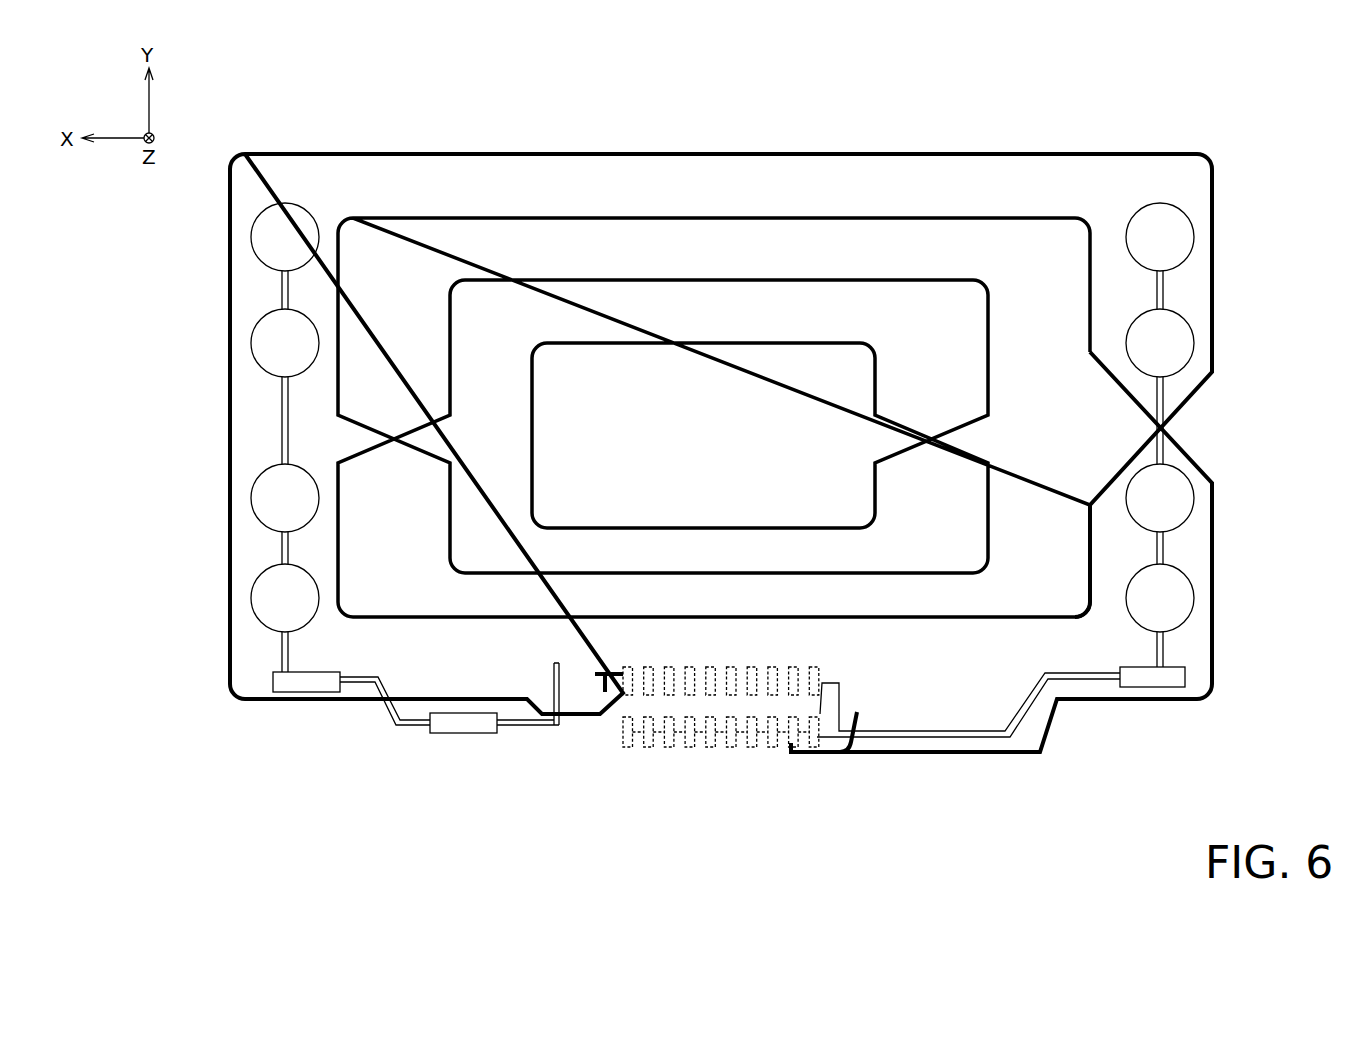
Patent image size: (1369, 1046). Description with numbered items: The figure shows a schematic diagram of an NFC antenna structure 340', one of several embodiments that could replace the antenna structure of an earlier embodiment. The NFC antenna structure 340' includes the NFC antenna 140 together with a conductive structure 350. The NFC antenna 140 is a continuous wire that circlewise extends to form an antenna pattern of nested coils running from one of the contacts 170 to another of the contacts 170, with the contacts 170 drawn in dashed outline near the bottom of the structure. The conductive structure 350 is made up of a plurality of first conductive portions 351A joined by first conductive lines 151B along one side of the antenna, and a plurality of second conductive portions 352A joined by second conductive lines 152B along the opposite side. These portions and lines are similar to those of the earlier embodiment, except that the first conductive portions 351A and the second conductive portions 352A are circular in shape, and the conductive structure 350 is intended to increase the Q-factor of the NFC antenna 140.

The NFC antenna structure 340' is at (721, 406).
The NFC antenna 140 is at (835, 218).
The second conductive portion 352A is at (250, 237).
The second conductive line 152B is at (281, 292).
The first conductive portion 351A is at (1194, 237).
The first conductive line 151B is at (1164, 301).
The conductive structure 350 is at (1208, 288).
The contact 170 is at (780, 777).